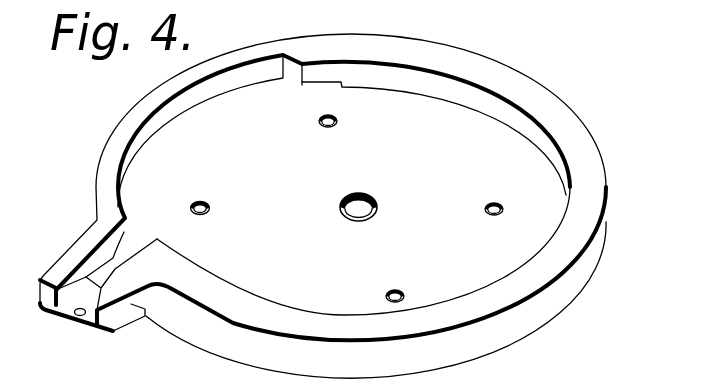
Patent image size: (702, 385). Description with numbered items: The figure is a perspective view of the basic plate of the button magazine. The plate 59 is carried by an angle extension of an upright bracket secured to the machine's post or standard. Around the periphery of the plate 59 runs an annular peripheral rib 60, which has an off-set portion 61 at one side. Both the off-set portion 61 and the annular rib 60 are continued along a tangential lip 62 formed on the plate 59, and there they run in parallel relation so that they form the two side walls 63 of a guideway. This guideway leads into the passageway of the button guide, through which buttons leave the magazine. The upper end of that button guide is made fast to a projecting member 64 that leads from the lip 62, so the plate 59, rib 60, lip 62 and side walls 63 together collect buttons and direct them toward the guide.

The plate 59 is at (497, 247).
The annular peripheral rib 60 is at (522, 288).
The off-set portion 61 is at (166, 106).
The tangential lip 62 is at (117, 266).
The side walls 63 is at (78, 240).
The projecting member 64 is at (80, 317).